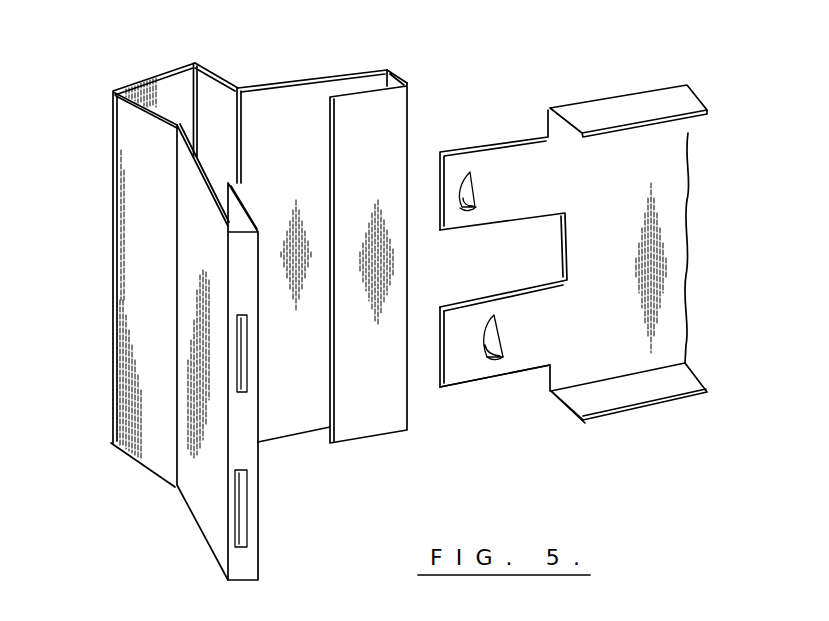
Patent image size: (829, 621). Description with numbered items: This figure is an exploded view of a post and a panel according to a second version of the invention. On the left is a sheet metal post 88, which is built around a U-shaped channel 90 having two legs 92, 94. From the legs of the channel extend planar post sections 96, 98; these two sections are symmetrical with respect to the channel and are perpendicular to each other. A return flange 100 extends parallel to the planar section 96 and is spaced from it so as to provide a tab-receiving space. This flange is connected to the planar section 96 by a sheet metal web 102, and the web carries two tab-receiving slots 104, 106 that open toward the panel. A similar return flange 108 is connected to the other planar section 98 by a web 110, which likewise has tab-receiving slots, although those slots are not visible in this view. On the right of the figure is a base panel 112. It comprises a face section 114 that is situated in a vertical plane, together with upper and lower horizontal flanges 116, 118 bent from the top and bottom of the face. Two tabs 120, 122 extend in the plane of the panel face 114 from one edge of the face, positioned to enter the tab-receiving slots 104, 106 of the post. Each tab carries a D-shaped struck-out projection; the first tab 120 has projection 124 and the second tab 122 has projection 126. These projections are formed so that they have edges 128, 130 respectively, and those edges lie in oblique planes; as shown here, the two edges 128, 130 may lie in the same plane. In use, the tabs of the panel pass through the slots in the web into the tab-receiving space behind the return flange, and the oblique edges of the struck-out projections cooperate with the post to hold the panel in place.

The sheet metal post 88 is at (354, 221).
The U-shaped channel 90 is at (158, 75).
The leg 92 is at (215, 72).
The leg 94 is at (138, 146).
The planar post section 96 is at (200, 236).
The planar post section 98 is at (282, 113).
The return flange 100 is at (270, 190).
The sheet metal web 102 is at (252, 293).
The tab-receiving slot 104 is at (243, 368).
The tab-receiving slot 106 is at (240, 510).
The return flange 108 is at (365, 112).
The web 110 is at (397, 76).
The base panel 112 is at (572, 231).
The face section 114 is at (604, 165).
The upper horizontal flange 116 is at (656, 110).
The lower horizontal flange 118 is at (632, 395).
The tab 120 is at (507, 210).
The tab 122 is at (516, 366).
The D-shaped struck-out projection 124 is at (460, 208).
The D-shaped struck-out projection 126 is at (484, 348).
The edge 128 is at (470, 178).
The edge 130 is at (498, 322).